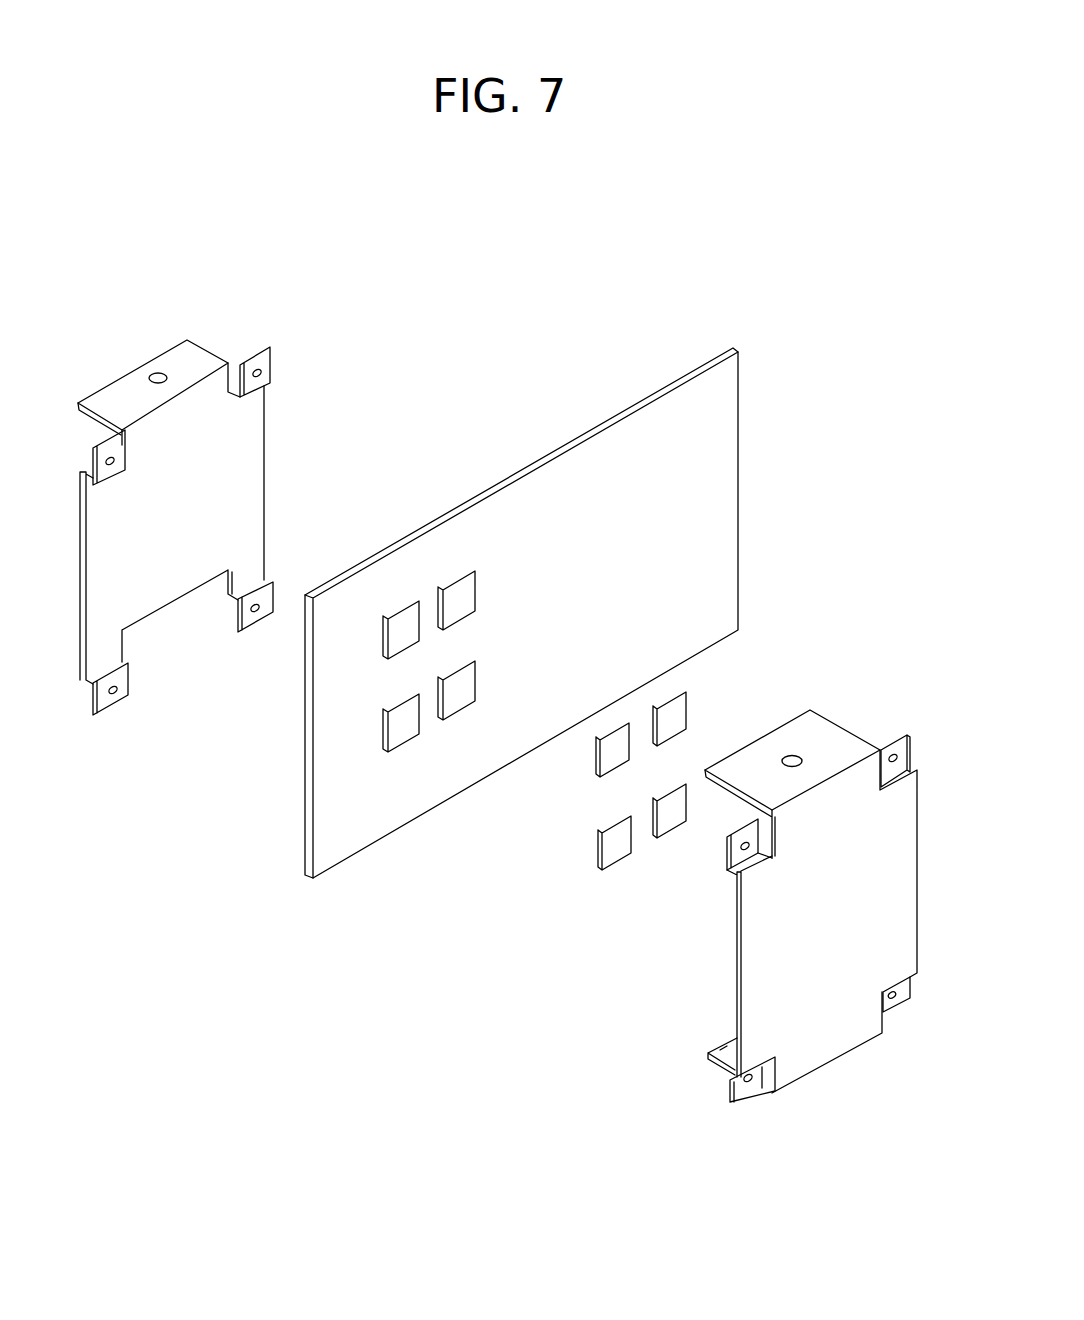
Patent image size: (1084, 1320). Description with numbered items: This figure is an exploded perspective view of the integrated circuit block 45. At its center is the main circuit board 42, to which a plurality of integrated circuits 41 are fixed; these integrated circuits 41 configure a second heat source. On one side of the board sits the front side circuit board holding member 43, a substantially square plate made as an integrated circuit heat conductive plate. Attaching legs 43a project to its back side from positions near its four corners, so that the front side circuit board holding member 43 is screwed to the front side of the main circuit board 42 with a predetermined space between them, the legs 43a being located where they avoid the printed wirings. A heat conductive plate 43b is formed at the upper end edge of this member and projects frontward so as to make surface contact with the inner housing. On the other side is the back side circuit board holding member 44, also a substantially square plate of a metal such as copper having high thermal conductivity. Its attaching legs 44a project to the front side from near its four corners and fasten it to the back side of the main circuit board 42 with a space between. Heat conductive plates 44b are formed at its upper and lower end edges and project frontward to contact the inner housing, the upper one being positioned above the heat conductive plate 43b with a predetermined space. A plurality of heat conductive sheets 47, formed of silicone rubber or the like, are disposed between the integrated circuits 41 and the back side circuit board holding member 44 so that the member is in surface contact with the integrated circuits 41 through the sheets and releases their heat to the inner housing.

The integrated circuit 41 is at (400, 610).
The main circuit board 42 is at (680, 525).
The front side circuit board holding member 43 is at (212, 485).
The attaching leg 43a is at (118, 432).
The heat conductive plate 43b is at (158, 370).
The back side circuit board holding member 44 is at (767, 930).
The attaching leg 44a is at (903, 733).
The heat conductive plate 44b is at (795, 750).
The integrated circuit block 45 is at (520, 350).
The heat conductive sheet 47 is at (612, 753).